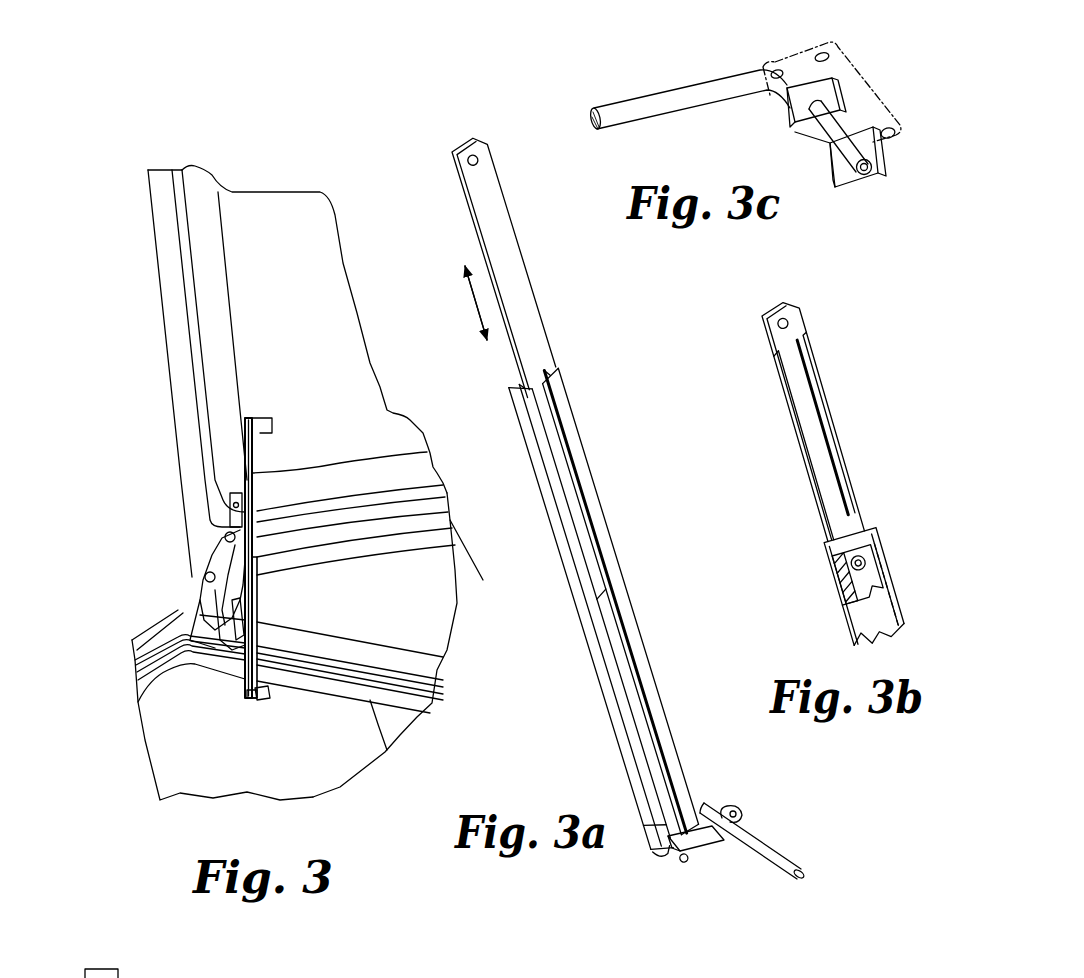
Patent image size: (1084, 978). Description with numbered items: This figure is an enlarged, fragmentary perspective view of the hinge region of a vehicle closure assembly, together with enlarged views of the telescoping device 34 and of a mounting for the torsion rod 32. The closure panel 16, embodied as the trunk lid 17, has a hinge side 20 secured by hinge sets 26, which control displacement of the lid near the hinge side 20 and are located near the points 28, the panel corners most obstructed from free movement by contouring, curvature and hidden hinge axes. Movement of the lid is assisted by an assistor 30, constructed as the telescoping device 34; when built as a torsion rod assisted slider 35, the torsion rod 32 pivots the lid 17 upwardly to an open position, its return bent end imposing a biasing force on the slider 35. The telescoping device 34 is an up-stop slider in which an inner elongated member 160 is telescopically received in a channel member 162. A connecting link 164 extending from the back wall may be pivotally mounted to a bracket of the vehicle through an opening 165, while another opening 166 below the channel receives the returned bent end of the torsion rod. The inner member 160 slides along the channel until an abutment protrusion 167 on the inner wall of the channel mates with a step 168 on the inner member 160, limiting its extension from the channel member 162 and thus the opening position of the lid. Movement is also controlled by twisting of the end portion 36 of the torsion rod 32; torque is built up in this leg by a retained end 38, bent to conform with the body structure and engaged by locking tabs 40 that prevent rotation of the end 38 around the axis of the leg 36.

In FIG. 3, the closure panel 16 is at (168, 400).
In FIG. 3, the trunk lid 17 is at (170, 303).
In FIG. 3, the hinge side 20 is at (355, 537).
In FIG. 3, the hinge sets 26 is at (190, 583).
In FIG. 3, the points 28 is at (228, 532).
In FIG. 3, the assistor 30 is at (227, 693).
In FIG. 3, the torsion rod 32 is at (370, 707).
In FIG. 3, the telescoping device 34 is at (237, 603).
In FIG. 3A, the telescoping device 34 is at (642, 531).
In FIG. 3A, the slider 35 is at (723, 802).
In FIG. 3A, the end portion 36 is at (684, 858).
In FIG. 3C, the end portion 36 is at (688, 92).
In FIG. 3C, the retained end 38 is at (835, 125).
In FIG. 3C, the locking tabs 40 is at (877, 167).
In FIG. 3, the inner elongated member 160 is at (257, 538).
In FIG. 3A, the inner elongated member 160 is at (506, 266).
In FIG. 3B, the inner elongated member 160 is at (812, 420).
In FIG. 3, the channel member 162 is at (257, 575).
In FIG. 3A, the channel member 162 is at (605, 610).
In FIG. 3B, the channel member 162 is at (865, 588).
In FIG. 3, the connecting link 164 is at (260, 693).
In FIG. 3A, the connecting link 164 is at (707, 843).
In FIG. 3A, the opening 165 is at (747, 820).
In FIG. 3, the opening 166 is at (257, 622).
In FIG. 3A, the opening 166 is at (658, 839).
In FIG. 3B, the abutment protrusion 167 is at (857, 562).
In FIG. 3B, the step 168 is at (858, 574).